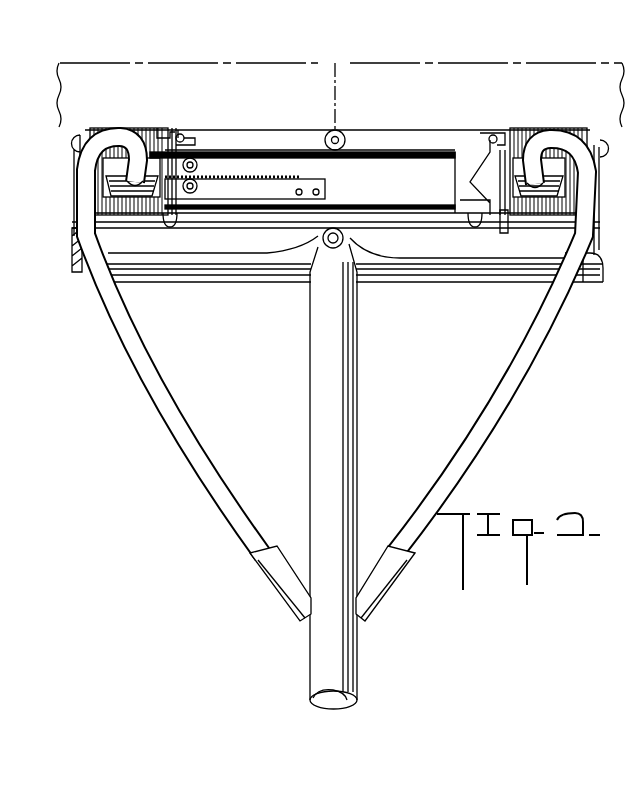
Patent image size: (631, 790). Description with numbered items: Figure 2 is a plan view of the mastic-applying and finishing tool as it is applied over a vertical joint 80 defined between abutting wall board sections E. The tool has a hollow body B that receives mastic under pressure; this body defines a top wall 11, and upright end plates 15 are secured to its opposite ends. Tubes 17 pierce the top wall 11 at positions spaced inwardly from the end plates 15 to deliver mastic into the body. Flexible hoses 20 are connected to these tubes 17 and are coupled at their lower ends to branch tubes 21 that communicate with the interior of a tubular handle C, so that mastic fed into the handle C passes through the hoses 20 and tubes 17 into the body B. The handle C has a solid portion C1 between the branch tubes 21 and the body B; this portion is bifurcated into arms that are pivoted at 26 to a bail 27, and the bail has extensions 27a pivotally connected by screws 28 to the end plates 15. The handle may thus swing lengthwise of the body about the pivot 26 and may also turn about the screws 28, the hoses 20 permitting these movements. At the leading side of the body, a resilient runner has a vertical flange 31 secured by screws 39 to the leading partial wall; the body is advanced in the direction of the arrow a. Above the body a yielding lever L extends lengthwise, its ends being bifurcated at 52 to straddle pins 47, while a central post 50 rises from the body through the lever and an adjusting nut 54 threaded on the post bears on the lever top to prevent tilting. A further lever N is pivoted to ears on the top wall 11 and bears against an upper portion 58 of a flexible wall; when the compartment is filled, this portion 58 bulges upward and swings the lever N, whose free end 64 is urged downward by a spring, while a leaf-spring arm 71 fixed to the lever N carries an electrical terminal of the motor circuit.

The top wall 11 is at (203, 217).
The upright plates 15 is at (84, 128).
The tubes 17 is at (140, 174).
The flexible hoses 20 is at (158, 394).
The branch tubes 21 is at (299, 604).
The pivot 26 is at (326, 246).
The bail 27 is at (210, 276).
The extensions 27a is at (74, 238).
The screws 28 is at (70, 144).
The vertical flange 31 is at (148, 218).
The screws 39 is at (505, 226).
The pins 47 is at (184, 134).
The post 50 is at (341, 132).
The bifurcated ends 52 is at (160, 128).
The adjusting nut 54 is at (331, 130).
The upper portion of the flexible wall 58 is at (416, 150).
The free end 64 is at (232, 167).
The leaf-spring arm 71 is at (245, 179).
The vertical joint 80 is at (337, 87).
The wall board E is at (348, 72).
The yielding lever L is at (259, 119).
The hollow body B is at (537, 126).
The lever N is at (404, 192).
The arrow a is at (250, 292).
The tubular handle C is at (332, 644).
The solid portion of the handle C1 is at (322, 398).